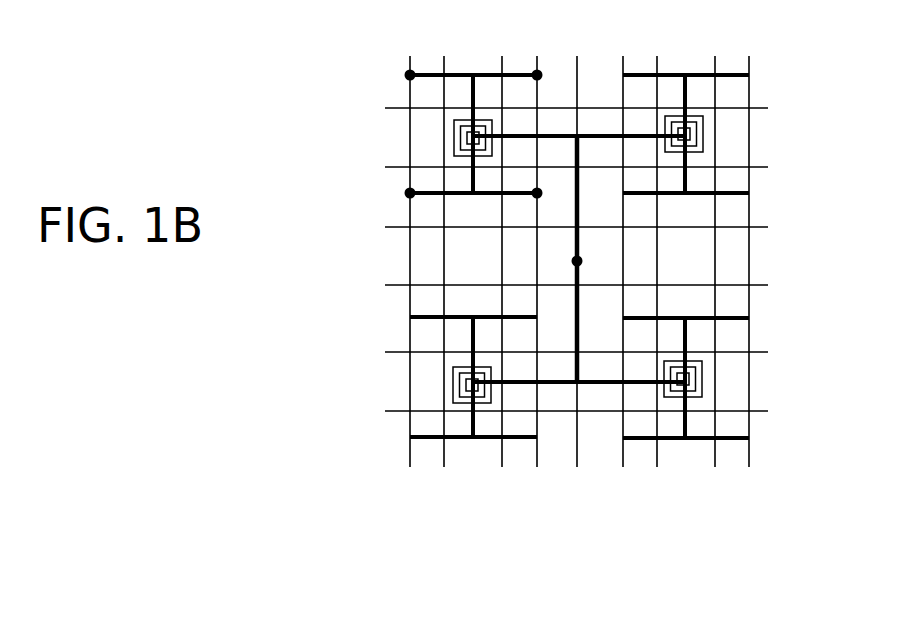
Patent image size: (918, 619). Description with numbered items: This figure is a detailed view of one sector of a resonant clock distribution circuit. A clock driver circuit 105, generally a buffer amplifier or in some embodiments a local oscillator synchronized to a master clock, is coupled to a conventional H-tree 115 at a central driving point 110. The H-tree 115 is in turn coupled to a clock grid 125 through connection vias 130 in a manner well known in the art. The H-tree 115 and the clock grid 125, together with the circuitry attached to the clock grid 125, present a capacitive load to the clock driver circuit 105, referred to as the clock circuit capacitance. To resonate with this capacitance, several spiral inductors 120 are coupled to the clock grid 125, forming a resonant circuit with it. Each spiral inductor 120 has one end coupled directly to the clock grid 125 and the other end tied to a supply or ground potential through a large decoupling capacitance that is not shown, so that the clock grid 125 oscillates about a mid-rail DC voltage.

The clock driver circuit 105 is at (577, 261).
The central driving point 110 is at (575, 258).
The H-tree 115 is at (582, 192).
The spiral inductors 120 is at (452, 143).
The clock grid 125 is at (748, 245).
The connection vias 130 is at (410, 75).